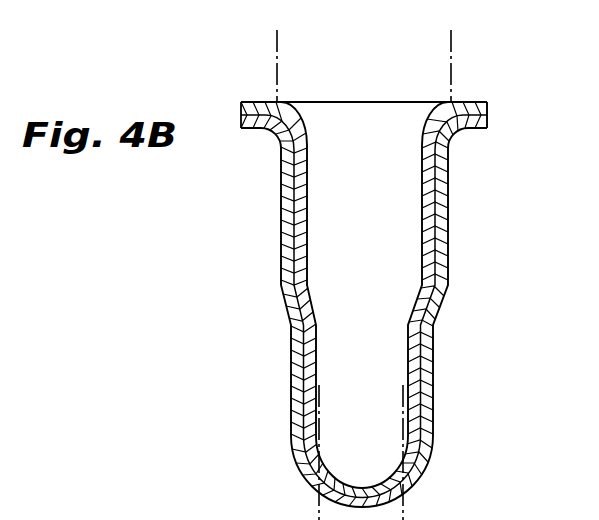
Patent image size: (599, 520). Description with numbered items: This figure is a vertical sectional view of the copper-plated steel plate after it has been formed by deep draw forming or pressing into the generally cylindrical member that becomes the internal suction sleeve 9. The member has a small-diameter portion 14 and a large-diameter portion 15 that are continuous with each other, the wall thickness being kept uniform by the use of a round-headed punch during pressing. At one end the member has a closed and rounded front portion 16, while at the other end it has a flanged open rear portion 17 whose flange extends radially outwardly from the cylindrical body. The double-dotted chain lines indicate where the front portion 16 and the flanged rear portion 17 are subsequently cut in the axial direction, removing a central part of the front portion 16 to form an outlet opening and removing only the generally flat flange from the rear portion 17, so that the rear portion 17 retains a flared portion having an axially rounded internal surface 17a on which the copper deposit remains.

The internal suction sleeve 9 is at (293, 190).
The large-diameter portion 15 is at (405, 241).
The small-diameter portion 14 is at (393, 405).
The front portion 16 is at (410, 492).
The flanged open rear portion 17 is at (478, 127).
The axially rounded internal surface 17a is at (273, 311).